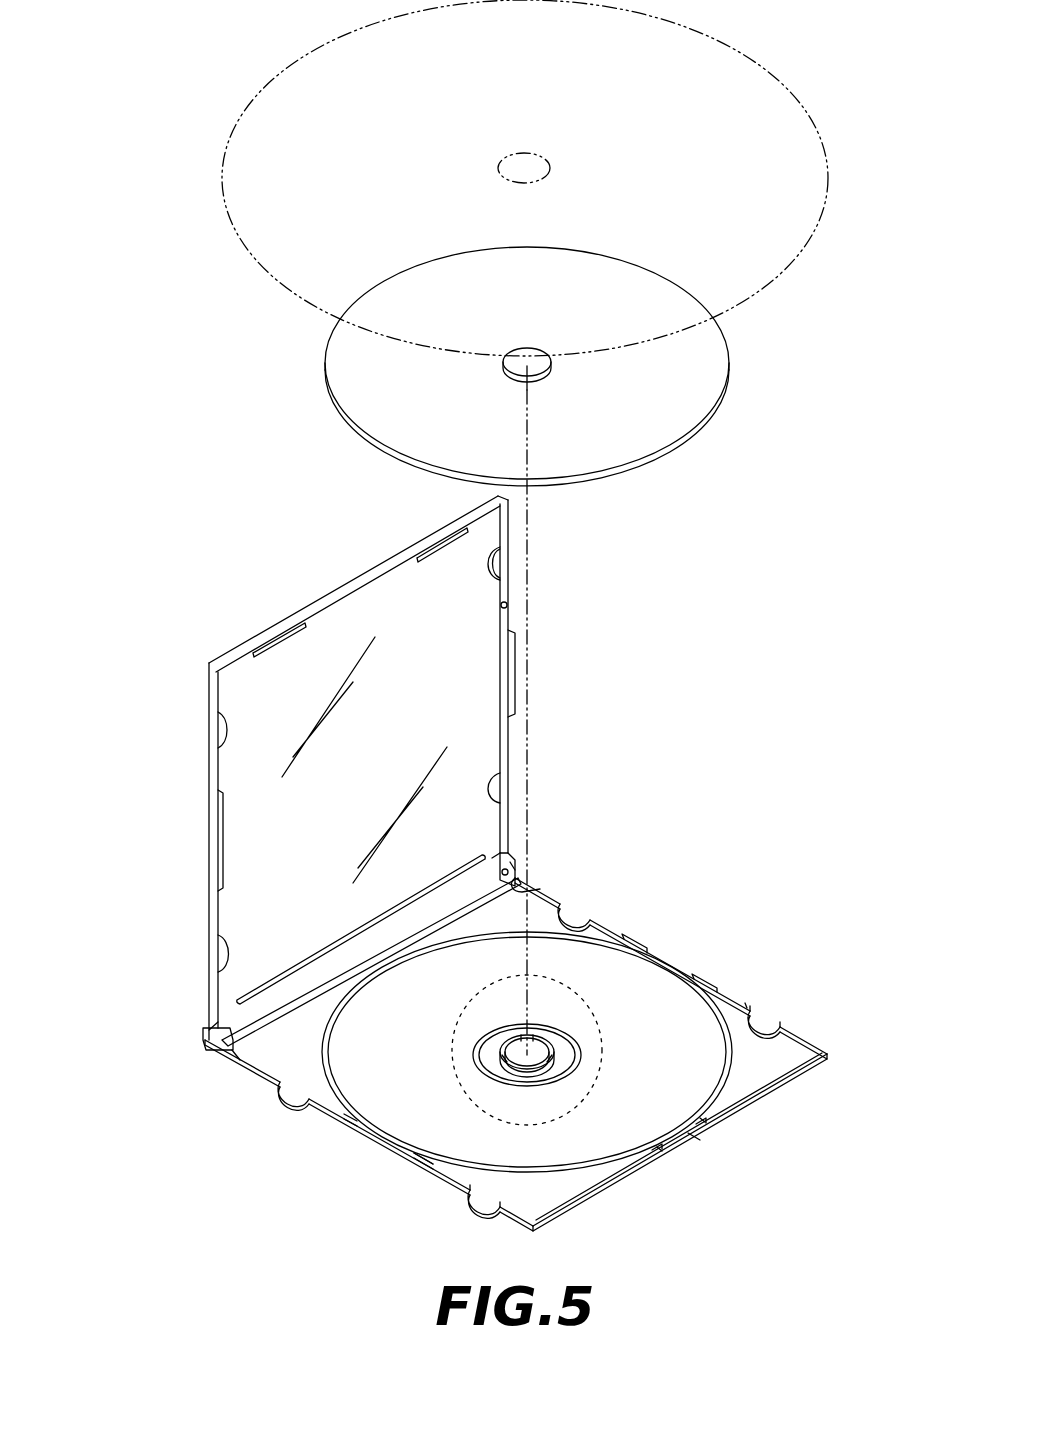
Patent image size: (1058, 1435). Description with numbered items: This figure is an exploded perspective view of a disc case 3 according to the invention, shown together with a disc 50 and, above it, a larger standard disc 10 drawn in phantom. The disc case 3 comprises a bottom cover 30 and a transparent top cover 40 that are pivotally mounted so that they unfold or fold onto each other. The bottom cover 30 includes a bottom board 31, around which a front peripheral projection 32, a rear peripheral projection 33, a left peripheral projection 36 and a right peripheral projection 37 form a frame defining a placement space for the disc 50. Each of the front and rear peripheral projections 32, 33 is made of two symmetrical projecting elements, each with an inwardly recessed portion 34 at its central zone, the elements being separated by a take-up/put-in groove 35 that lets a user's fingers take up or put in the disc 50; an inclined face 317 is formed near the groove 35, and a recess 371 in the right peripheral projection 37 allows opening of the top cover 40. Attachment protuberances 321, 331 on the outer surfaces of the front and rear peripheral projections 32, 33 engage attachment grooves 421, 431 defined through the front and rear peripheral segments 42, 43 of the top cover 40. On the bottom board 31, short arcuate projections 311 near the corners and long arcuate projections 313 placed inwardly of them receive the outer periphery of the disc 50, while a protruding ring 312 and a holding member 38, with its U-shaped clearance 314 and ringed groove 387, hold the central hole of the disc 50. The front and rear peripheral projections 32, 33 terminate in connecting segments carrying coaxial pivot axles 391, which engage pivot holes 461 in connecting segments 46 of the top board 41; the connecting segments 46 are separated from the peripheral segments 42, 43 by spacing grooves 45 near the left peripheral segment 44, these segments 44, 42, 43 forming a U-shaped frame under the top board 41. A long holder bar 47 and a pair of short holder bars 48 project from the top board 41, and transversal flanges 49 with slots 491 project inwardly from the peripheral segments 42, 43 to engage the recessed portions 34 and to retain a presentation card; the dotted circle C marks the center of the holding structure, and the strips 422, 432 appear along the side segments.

The disc case 3 is at (730, 667).
The standard disc 10 is at (752, 294).
The bottom cover 30 is at (662, 824).
The bottom board 31 is at (390, 1100).
The short arcuate projections 311 is at (576, 915).
The protruding ring 312 is at (652, 1150).
The long arcuate projections 313 is at (390, 985).
The U-shaped clearance 314 is at (572, 1065).
The inclined face 317 is at (386, 1140).
The front peripheral projection 32 is at (344, 1148).
The attachment protuberance 321 is at (426, 1176).
The rear peripheral projection 33 is at (746, 973).
The attachment protuberance 331 is at (722, 1000).
The recessed portion 34 is at (766, 1025).
The take-up/put-in groove 35 is at (412, 1160).
The left peripheral projection 36 is at (526, 886).
The right peripheral projection 37 is at (730, 1154).
The recess 371 is at (690, 1140).
The holding member 38 is at (509, 1039).
The ringed groove 387 is at (505, 1075).
The pivot axle 391 is at (510, 860).
The top cover 40 is at (630, 703).
The top board 41 is at (346, 590).
The front peripheral segment 42 is at (173, 846).
The attachment groove 421 is at (217, 735).
The side wall strip 422 is at (215, 845).
The rear peripheral segment 43 is at (556, 673).
The attachment groove 431 is at (506, 605).
The side wall strip 432 is at (513, 670).
The left peripheral segment 44 is at (216, 1012).
The spacing groove 45 is at (558, 842).
The connecting segment 46 is at (311, 918).
The pivot hole 461 is at (498, 860).
The long holder bar 47 is at (336, 935).
The short holder bars 48 is at (430, 562).
The transversal flanges 49 is at (406, 759).
The slot 491 is at (498, 783).
The disc 50 is at (700, 410).
The center C is at (605, 1045).